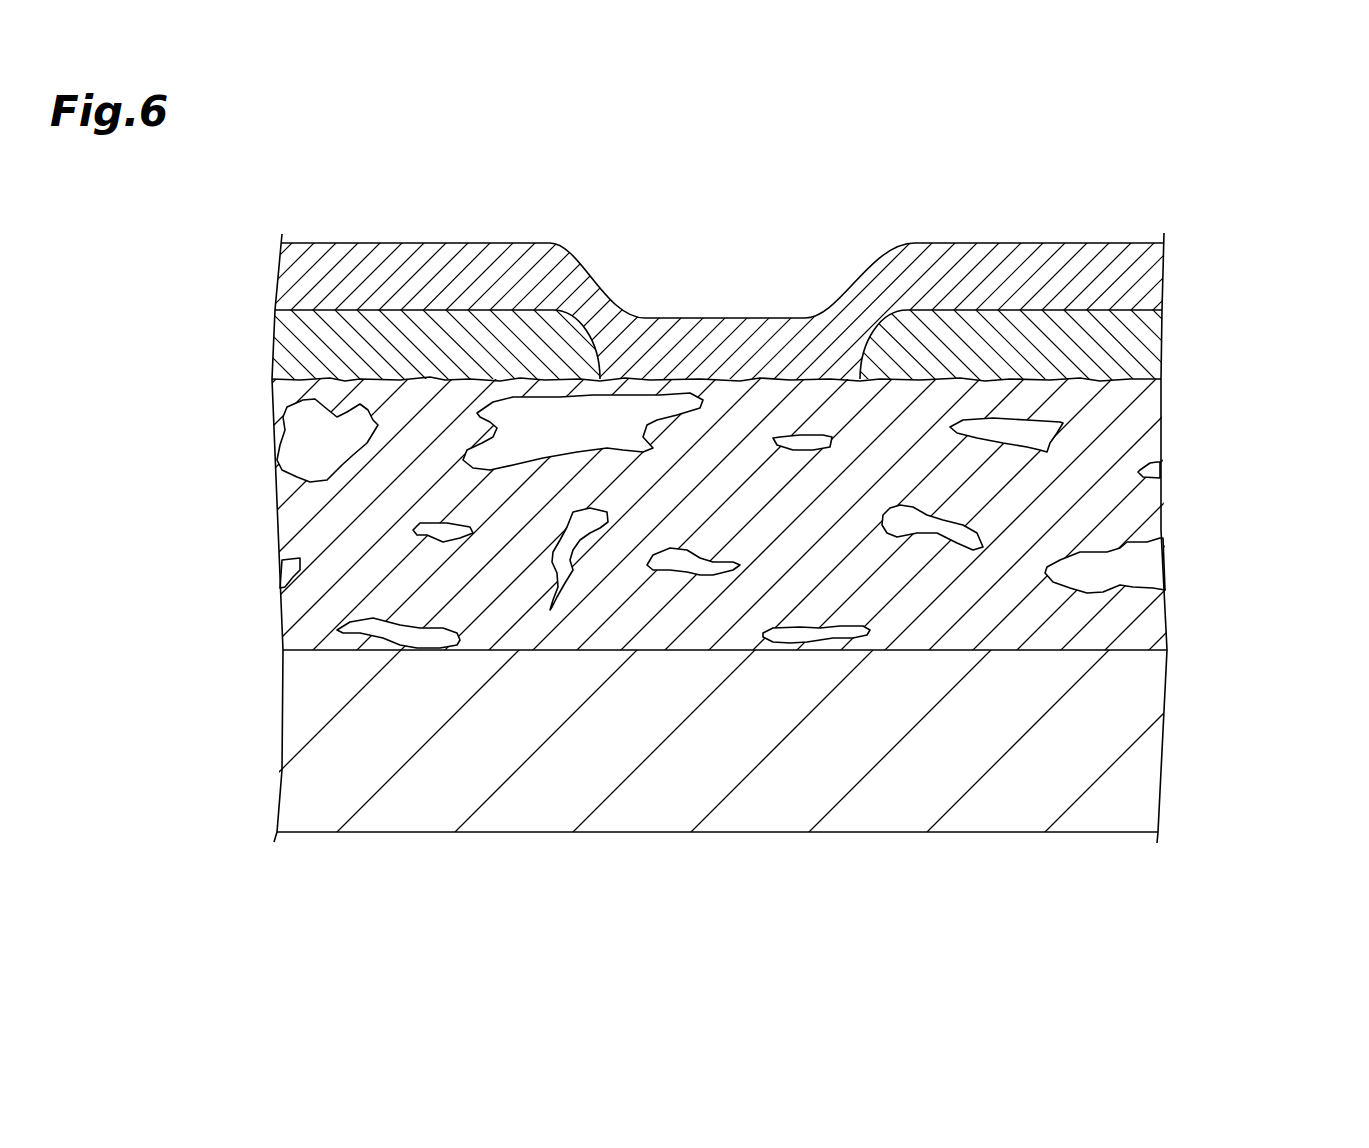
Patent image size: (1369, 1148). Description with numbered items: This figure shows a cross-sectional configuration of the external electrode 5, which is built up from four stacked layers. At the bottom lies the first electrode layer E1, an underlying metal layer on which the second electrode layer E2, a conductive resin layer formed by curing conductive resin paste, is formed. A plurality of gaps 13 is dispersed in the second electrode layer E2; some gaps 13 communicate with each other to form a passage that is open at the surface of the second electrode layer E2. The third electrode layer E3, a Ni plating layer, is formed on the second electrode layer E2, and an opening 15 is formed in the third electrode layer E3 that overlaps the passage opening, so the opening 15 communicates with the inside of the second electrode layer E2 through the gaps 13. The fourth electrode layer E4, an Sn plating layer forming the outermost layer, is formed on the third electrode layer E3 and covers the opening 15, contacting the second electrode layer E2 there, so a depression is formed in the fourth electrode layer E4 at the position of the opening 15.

The external electrode 5 is at (1312, 238).
The gaps 13 is at (415, 530).
The openings 15 is at (608, 415).
The first electrode layer E1 is at (1148, 763).
The second electrode layer E2 is at (1137, 422).
The third electrode layer E3 is at (1125, 340).
The fourth electrode layer E4 is at (1133, 272).